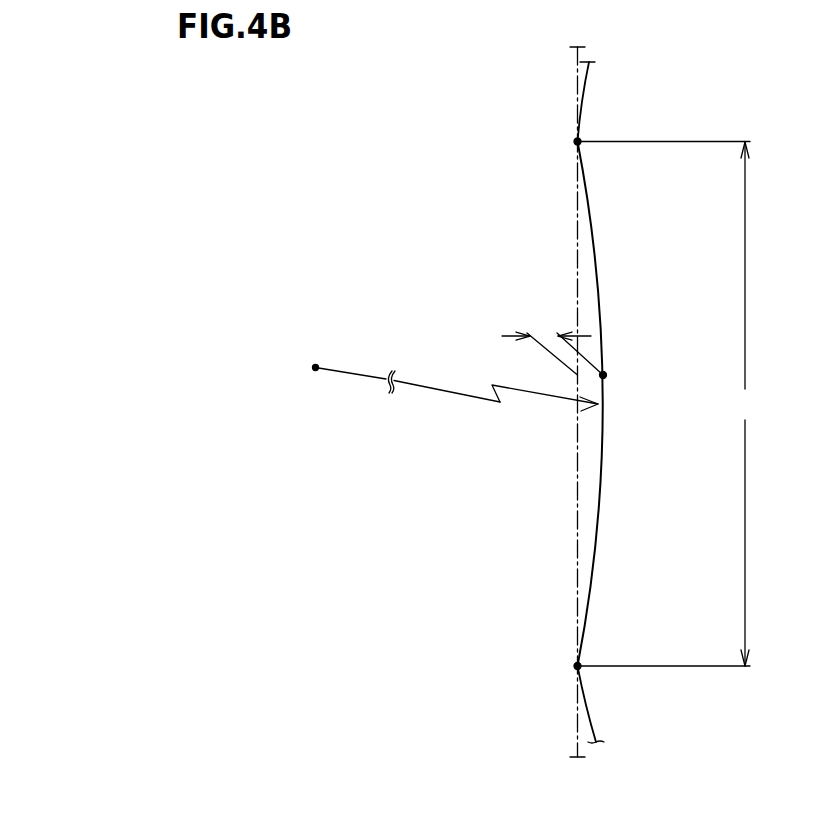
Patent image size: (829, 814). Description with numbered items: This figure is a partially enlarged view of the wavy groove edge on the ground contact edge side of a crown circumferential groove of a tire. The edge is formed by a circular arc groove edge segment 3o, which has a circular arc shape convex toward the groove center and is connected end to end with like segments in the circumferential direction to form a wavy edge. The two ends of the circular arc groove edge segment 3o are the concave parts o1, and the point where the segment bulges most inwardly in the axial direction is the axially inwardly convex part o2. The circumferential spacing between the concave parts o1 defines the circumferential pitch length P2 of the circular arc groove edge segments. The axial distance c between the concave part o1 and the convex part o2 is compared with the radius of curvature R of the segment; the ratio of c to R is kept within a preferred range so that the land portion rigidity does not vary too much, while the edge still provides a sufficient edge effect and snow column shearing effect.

The circular arc groove edge segment 3o is at (597, 212).
The concave part o1 is at (578, 142).
The axially inwardly convex part o2 is at (603, 375).
The circumferential pitch length P2 is at (669, 404).
The axial distance c is at (552, 343).
The radius of curvature R is at (456, 387).